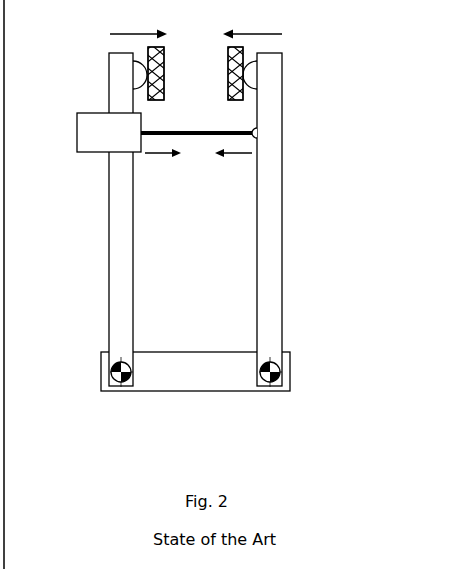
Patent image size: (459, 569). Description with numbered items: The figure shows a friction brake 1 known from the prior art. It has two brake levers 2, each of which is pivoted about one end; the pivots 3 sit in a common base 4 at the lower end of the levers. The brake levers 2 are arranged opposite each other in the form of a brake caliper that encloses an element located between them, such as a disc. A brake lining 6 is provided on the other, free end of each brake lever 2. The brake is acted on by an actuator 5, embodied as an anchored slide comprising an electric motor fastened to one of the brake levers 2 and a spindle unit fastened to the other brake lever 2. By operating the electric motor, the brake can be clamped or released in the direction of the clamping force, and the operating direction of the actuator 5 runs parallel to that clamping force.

The lifting device (state of the art) 1 is at (161, 236).
The brake levers 2 is at (122, 245).
The pivot bearing 3 is at (120, 375).
The base plate 4 is at (187, 370).
The actuator 5 is at (92, 166).
The brake lining 6 is at (148, 67).